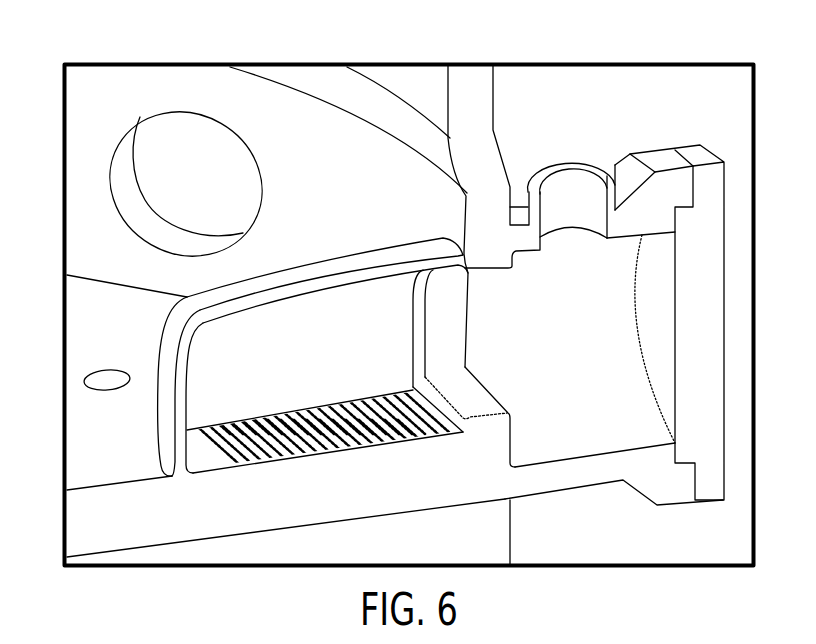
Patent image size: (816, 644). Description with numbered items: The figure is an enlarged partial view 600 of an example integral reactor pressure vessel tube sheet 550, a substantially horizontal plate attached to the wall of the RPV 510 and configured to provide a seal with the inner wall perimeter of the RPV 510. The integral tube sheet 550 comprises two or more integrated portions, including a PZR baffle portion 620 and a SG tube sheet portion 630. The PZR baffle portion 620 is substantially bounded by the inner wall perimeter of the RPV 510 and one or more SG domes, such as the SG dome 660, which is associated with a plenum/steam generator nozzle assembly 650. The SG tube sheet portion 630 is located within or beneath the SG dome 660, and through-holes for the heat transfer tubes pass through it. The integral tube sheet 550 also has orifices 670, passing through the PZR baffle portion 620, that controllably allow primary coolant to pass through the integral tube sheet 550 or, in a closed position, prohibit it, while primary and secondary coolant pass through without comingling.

The enlarged partial view 600 is at (411, 62).
The RPV 510 is at (497, 135).
The integral tube sheet 550 is at (90, 442).
The PZR baffle portion 620 is at (143, 530).
The SG tube sheet portion 630 is at (372, 500).
The plenum/steam generator nozzle assembly 650 is at (660, 152).
The SG dome 660 is at (327, 318).
The orifices 670 is at (110, 373).